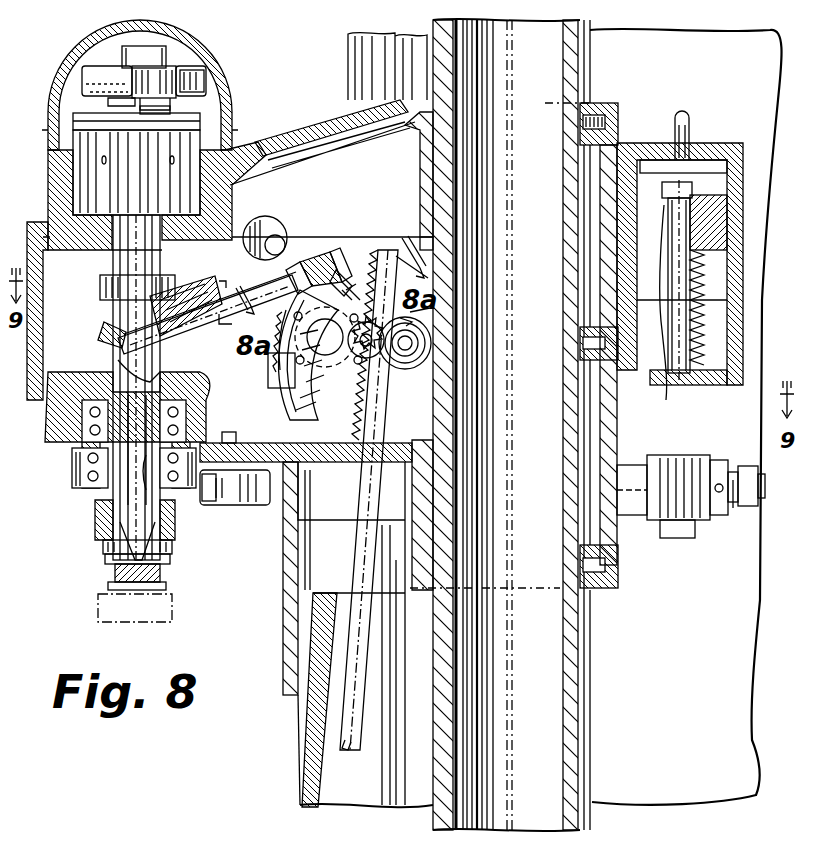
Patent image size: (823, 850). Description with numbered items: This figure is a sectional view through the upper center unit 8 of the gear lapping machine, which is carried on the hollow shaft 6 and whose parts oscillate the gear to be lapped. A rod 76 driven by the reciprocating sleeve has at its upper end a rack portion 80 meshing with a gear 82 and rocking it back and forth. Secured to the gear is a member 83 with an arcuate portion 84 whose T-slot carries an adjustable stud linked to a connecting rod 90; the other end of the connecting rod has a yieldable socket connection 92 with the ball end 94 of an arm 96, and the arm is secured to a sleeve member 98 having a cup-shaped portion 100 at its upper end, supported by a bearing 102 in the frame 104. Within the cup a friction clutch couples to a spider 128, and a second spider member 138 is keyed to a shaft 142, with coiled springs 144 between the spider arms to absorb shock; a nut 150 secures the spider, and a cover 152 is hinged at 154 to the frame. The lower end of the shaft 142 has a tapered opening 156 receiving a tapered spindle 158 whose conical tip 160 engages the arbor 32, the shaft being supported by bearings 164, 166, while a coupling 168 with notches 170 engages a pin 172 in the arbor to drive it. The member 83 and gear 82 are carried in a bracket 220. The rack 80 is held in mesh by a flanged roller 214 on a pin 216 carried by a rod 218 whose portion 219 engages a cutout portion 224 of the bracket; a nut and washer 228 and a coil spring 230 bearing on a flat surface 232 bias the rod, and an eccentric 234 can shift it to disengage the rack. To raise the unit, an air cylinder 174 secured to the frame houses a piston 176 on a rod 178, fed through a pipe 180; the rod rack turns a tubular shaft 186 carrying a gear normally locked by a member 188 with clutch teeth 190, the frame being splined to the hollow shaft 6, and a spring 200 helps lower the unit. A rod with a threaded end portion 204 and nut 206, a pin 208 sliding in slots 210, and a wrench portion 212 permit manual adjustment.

The hollow shaft 6 is at (586, 728).
The upper center unit 8 is at (242, 120).
The arbor 32 is at (122, 578).
The rod 76 is at (342, 720).
The rack portion 80 is at (376, 418).
The gear 82 is at (376, 358).
The member 83 is at (302, 416).
The arcuate portion 84 is at (320, 268).
The connecting rod 90 is at (222, 318).
The yieldable socket connection 92 is at (180, 350).
The ball end 94 is at (108, 344).
The arm 96 is at (129, 318).
The sleeve member 98 is at (122, 268).
The cup-shaped portion 100 is at (104, 196).
The bearing 102 is at (102, 250).
The frame 104 is at (612, 128).
The spider 128 is at (172, 66).
The second spider member 138 is at (86, 86).
The shaft 142 is at (104, 406).
The coiled springs 144 is at (208, 84).
The nut 150 is at (126, 62).
The cover 152 is at (176, 74).
The hinge 154 is at (236, 158).
The tapered opening 156 is at (136, 394).
The tapered spindle 158 is at (134, 504).
The conical tip 160 is at (129, 542).
The bearing 164 is at (92, 426).
The bearing 166 is at (84, 472).
The coupling 168 is at (180, 522).
The notches 170 is at (176, 552).
The pin 172 is at (174, 566).
The air cylinder 174 is at (744, 201).
The piston 176 is at (726, 231).
The rod 178 is at (704, 278).
The pipe 180 is at (694, 134).
The tubular shaft 186 is at (738, 514).
The member 188 is at (726, 524).
The clutch teeth 190 is at (596, 116).
The spring 200 is at (710, 326).
The threaded end portion 204 is at (224, 448).
The nut 206 is at (262, 468).
The pin 208 is at (722, 468).
The slots 210 is at (744, 472).
The portion 212 is at (254, 511).
The flanged roller 214 is at (429, 358).
The pin 216 is at (416, 350).
The rod 218 is at (300, 268).
The portion 219 is at (436, 328).
The bracket 220 is at (360, 268).
The cutout portion 224 is at (384, 351).
The nut and washer 228 is at (348, 254).
The coil spring 230 is at (352, 286).
The flat surface 232 is at (364, 281).
The eccentric 234 is at (262, 232).